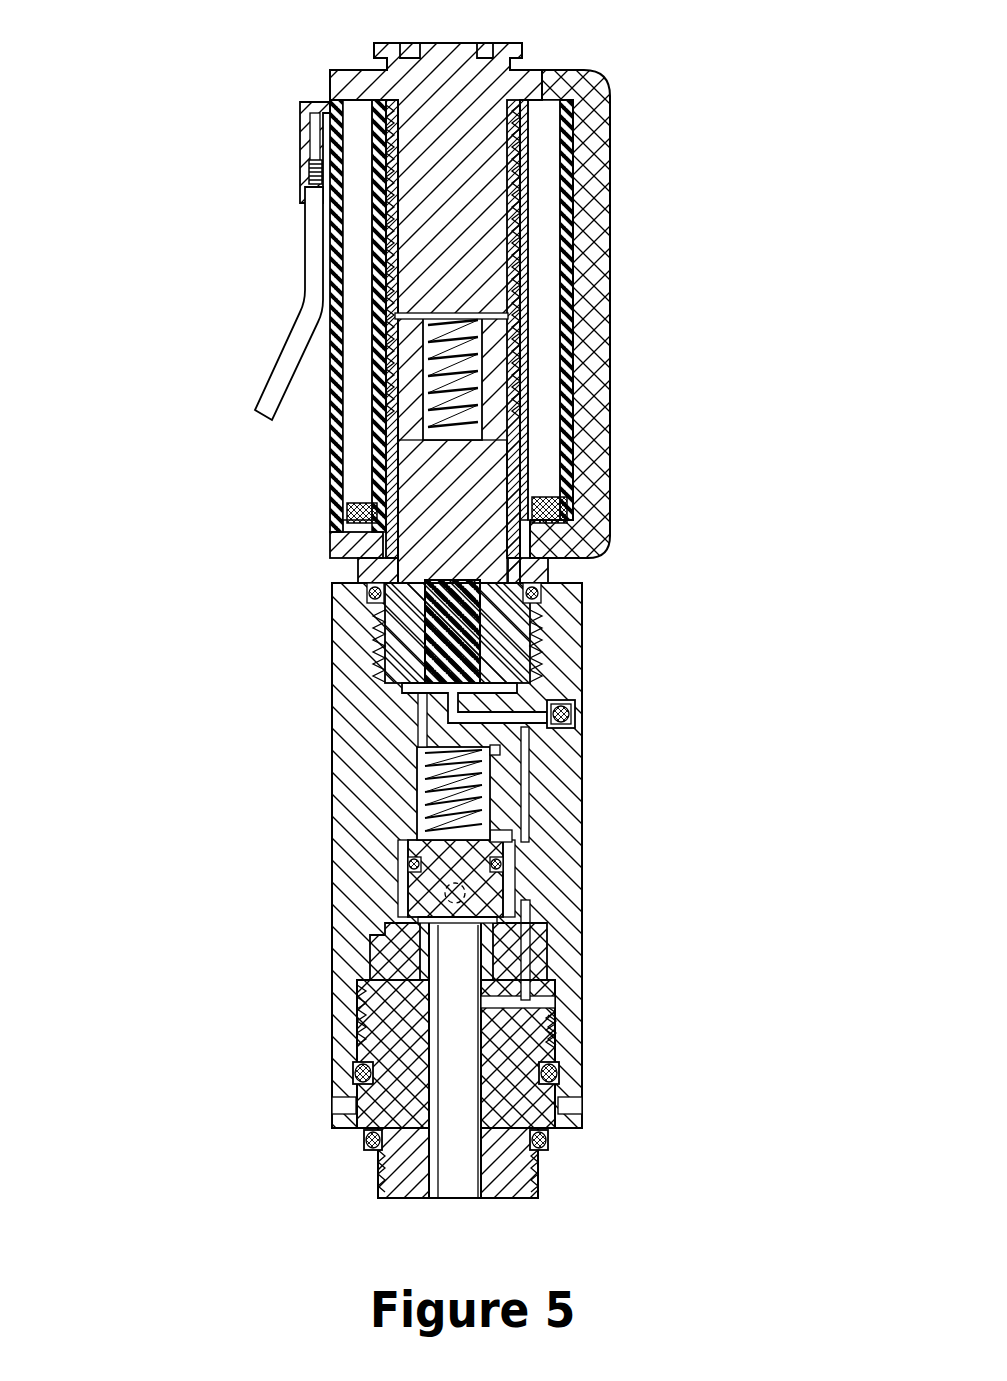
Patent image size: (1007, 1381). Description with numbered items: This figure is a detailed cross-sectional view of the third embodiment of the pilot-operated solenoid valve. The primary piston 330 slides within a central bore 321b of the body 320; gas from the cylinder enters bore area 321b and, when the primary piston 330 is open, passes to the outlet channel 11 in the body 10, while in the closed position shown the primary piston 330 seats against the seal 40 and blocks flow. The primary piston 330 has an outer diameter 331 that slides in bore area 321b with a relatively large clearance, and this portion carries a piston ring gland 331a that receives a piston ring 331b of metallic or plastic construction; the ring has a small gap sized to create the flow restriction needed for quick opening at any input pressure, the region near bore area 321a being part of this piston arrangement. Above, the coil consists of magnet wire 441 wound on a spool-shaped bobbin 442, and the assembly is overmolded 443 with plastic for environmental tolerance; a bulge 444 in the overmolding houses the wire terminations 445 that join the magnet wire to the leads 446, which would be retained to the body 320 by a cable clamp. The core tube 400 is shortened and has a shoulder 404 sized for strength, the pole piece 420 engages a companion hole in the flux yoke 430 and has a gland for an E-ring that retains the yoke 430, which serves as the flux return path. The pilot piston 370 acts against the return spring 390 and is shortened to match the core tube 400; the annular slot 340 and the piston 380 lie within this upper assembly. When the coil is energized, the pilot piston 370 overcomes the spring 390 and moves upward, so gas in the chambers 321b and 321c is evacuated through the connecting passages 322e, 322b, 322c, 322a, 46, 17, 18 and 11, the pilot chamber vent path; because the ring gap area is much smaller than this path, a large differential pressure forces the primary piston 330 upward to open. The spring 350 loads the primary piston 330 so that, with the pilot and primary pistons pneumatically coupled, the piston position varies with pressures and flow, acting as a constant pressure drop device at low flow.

The body 10 is at (337, 1170).
The outlet channel 11 is at (456, 1170).
The connecting passage 17 is at (512, 1003).
The connecting passage 18 is at (552, 1012).
The seal 40 is at (392, 953).
The connecting passage 46 is at (530, 950).
The body 320 is at (640, 592).
The bore area 321a is at (512, 912).
The central bore 321b is at (512, 837).
The chamber 321c is at (522, 758).
The connecting passage 322a is at (529, 790).
The connecting passage 322b is at (512, 690).
The connecting passage 322c is at (530, 718).
The connecting passage 322e is at (420, 718).
The primary piston 330 is at (425, 895).
The outer diameter 331 is at (497, 882).
The piston ring gland 331a is at (508, 862).
The piston ring 331b is at (410, 865).
The annular slot 340 is at (547, 262).
The spring 350 is at (440, 787).
The pilot piston 370 is at (447, 487).
The piston 380 is at (450, 632).
The return spring 390 is at (423, 368).
The core tube 400 is at (547, 245).
The shoulder 404 is at (567, 560).
The pole piece 420 is at (443, 88).
The flux yoke 430 is at (622, 306).
The magnet wire 441 is at (542, 500).
The bobbin 442 is at (565, 412).
The overmolding 443 is at (557, 485).
The bulge 444 is at (307, 108).
The wire terminations 445 is at (309, 170).
The leads 446 is at (312, 280).